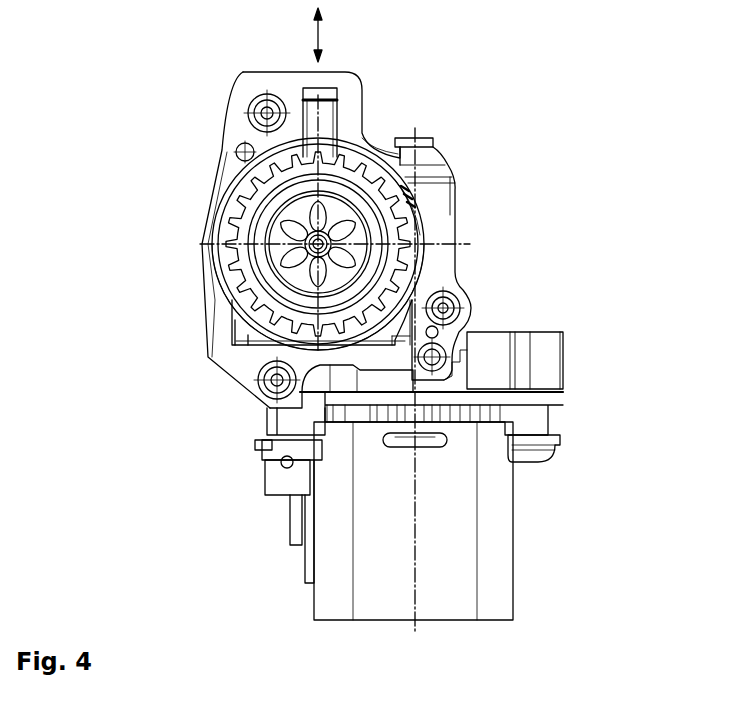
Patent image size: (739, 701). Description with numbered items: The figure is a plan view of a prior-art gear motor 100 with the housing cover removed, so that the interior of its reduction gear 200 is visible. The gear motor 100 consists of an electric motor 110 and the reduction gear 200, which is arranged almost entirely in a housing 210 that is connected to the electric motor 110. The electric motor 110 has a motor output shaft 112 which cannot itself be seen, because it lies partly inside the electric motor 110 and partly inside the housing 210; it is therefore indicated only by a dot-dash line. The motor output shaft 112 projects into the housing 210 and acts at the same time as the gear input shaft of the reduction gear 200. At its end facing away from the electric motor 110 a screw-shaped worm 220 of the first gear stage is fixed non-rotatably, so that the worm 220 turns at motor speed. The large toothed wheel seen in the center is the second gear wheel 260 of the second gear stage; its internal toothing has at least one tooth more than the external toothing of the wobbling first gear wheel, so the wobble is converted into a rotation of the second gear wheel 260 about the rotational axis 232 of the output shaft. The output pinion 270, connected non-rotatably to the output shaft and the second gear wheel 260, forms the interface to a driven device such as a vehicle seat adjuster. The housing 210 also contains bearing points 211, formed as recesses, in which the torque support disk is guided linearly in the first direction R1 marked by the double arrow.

The gear motor 100 is at (151, 168).
The electric motor 110 is at (497, 548).
The motor output shaft 112 is at (420, 167).
The reduction gear 200 is at (514, 282).
The housing 210 is at (213, 325).
The bearing points 211 is at (305, 93).
The worm 220 is at (410, 202).
The rotational axis 232 is at (322, 248).
The second gear wheel 260 is at (230, 251).
The output pinion 270 is at (293, 226).
The first direction R1 is at (326, 32).